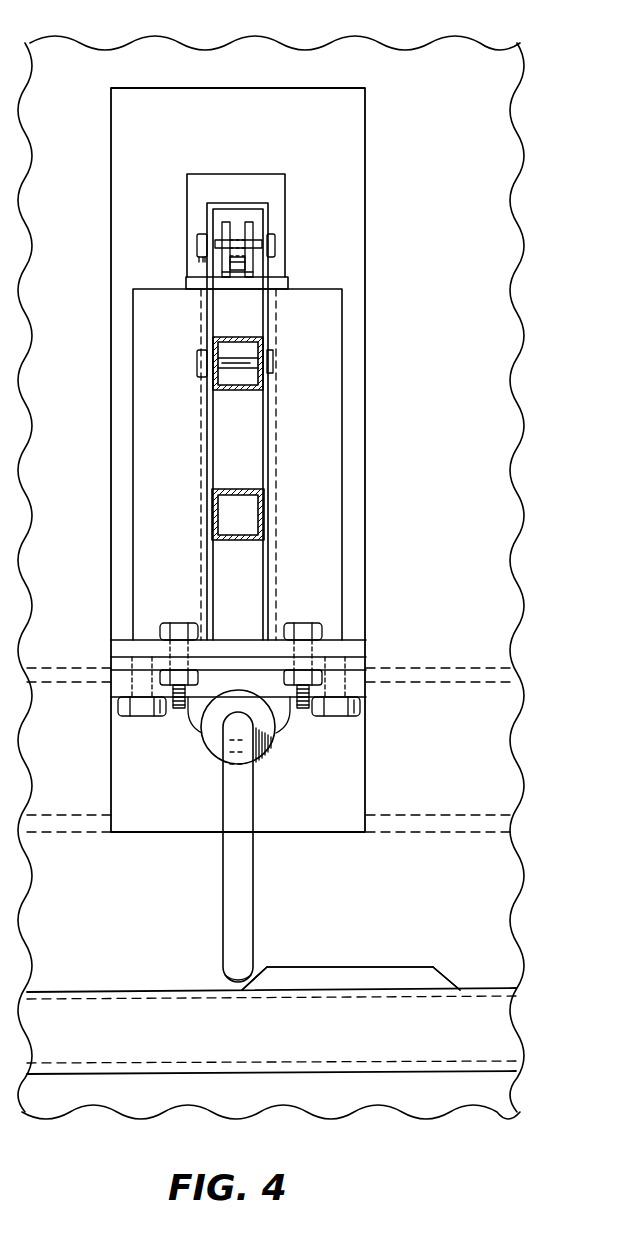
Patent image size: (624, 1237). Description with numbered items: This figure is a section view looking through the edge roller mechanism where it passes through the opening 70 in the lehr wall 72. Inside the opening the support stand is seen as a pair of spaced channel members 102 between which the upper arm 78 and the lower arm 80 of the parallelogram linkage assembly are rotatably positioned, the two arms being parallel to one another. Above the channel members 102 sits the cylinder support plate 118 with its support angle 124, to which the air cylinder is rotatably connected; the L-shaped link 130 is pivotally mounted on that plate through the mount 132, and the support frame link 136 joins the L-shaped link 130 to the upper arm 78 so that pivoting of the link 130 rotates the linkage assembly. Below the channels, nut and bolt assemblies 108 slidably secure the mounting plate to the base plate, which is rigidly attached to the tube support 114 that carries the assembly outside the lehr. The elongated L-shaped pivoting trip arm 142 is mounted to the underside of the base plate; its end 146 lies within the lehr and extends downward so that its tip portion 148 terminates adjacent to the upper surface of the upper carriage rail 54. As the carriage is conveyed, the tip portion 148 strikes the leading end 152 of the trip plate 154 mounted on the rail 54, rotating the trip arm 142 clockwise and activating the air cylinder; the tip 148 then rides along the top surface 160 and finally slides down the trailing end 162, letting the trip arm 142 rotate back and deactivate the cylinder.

The upper carriage rail 54 is at (500, 1030).
The opening 70 is at (252, 95).
The lehr wall 72 is at (497, 90).
The upper arm 78 is at (248, 390).
The lower arm 80 is at (235, 489).
The channel members 102 is at (133, 340).
The nut and bolt assemblies 108 is at (178, 622).
The tube support 114 is at (465, 667).
The cylinder support plate 118 is at (185, 282).
The support angle 124 is at (187, 187).
The L-shaped link 130 is at (240, 230).
The mount 132 is at (255, 260).
The support frame link 136 is at (205, 216).
The pivoting trip arm 142 is at (247, 735).
The end of trip arm 146 is at (222, 857).
The tip portion 148 is at (230, 982).
The leading end 152 is at (260, 967).
The trip plate 154 is at (420, 977).
The top surface 160 is at (340, 967).
The trailing end 162 is at (453, 980).